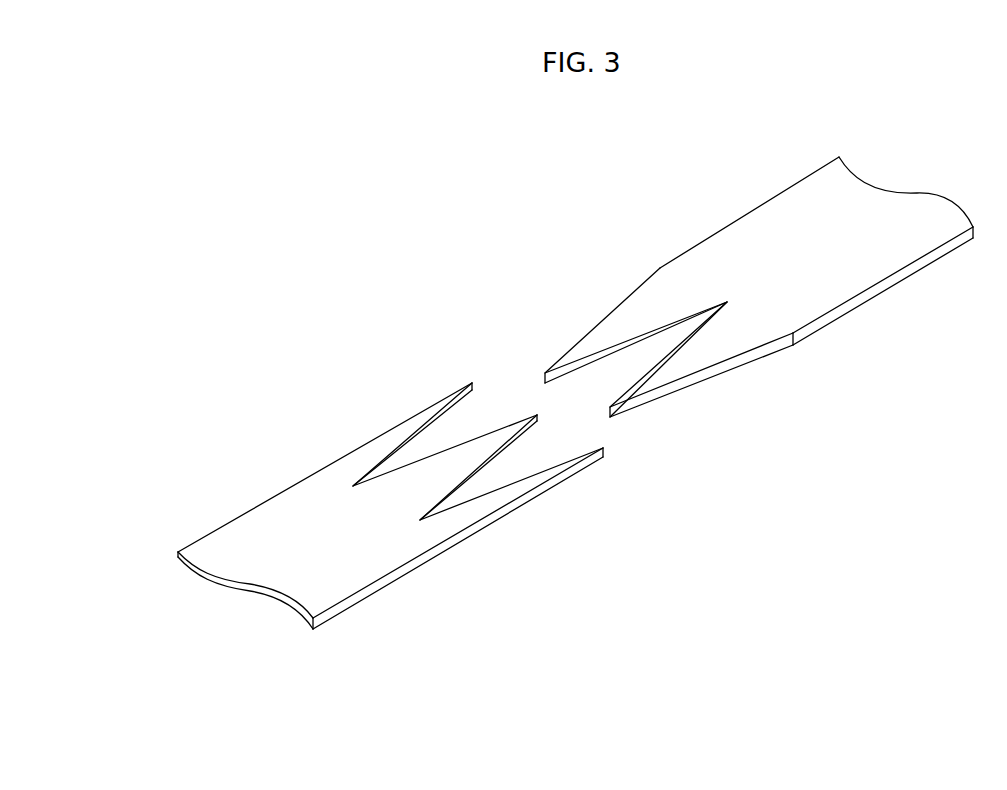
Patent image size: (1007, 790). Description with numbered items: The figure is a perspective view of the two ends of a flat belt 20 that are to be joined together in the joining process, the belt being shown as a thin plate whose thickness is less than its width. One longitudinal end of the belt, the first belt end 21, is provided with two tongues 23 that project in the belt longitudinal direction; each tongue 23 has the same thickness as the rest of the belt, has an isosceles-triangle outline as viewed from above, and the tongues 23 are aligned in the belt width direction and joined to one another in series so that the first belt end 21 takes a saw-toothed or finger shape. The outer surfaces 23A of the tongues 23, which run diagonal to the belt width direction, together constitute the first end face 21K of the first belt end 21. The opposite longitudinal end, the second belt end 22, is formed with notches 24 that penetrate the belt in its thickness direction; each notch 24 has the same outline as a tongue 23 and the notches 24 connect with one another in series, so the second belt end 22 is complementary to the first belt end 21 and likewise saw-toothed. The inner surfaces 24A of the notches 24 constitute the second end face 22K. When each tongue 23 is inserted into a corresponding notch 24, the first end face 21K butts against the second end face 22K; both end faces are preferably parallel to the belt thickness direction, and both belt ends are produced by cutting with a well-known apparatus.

The flat belt 20 is at (325, 635).
The first belt end 21 is at (678, 230).
The first end face 21K is at (810, 232).
The second belt end 22 is at (413, 392).
The second end face 22K is at (308, 505).
The tongue 23 is at (565, 347).
The outer surface of the tongue 23A is at (640, 378).
The notch 24 is at (459, 410).
The inner surface of the notch 24A is at (462, 452).